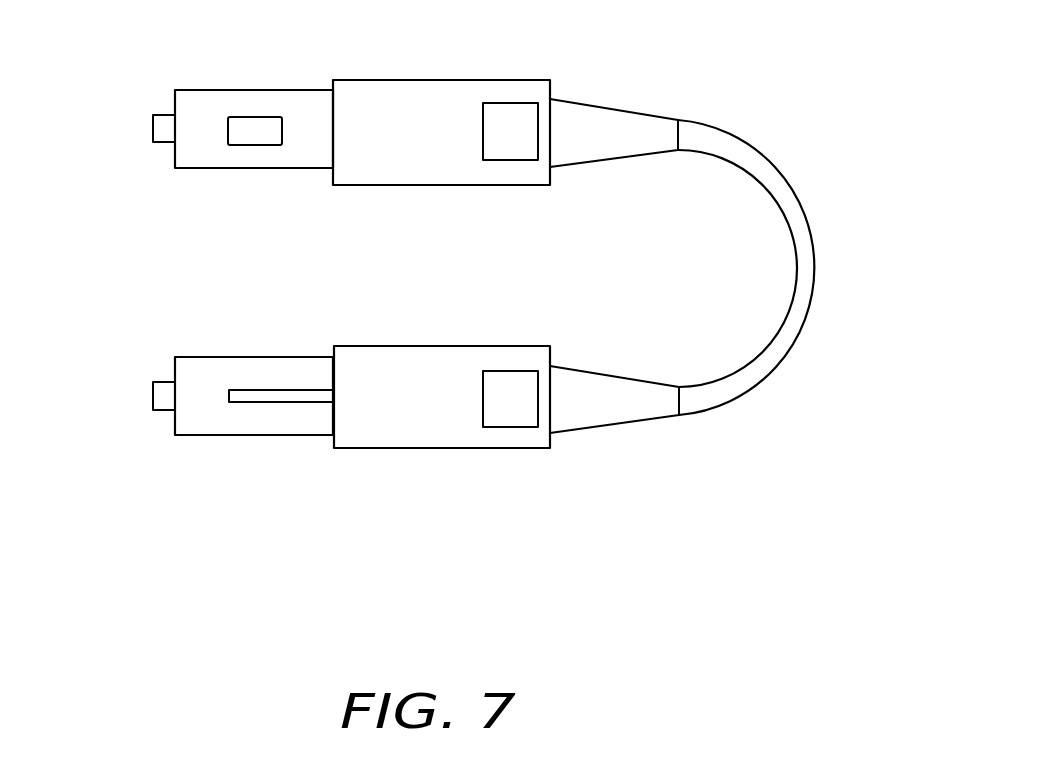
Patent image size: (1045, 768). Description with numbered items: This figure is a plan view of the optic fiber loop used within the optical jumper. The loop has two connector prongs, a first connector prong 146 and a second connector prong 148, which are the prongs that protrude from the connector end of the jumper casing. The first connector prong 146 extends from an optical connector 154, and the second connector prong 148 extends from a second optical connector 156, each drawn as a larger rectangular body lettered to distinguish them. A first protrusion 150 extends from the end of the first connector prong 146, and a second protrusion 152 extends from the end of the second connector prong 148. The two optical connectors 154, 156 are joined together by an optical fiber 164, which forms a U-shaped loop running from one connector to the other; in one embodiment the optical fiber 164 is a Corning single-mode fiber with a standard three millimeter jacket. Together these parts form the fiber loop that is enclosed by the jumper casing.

The first connector prong 146 is at (208, 104).
The second connector prong 148 is at (208, 366).
The first protrusion 150 is at (150, 122).
The second protrusion 152 is at (152, 388).
The optical connector 154 is at (397, 105).
The optical connector 156 is at (397, 370).
The optical fiber 164 is at (788, 190).